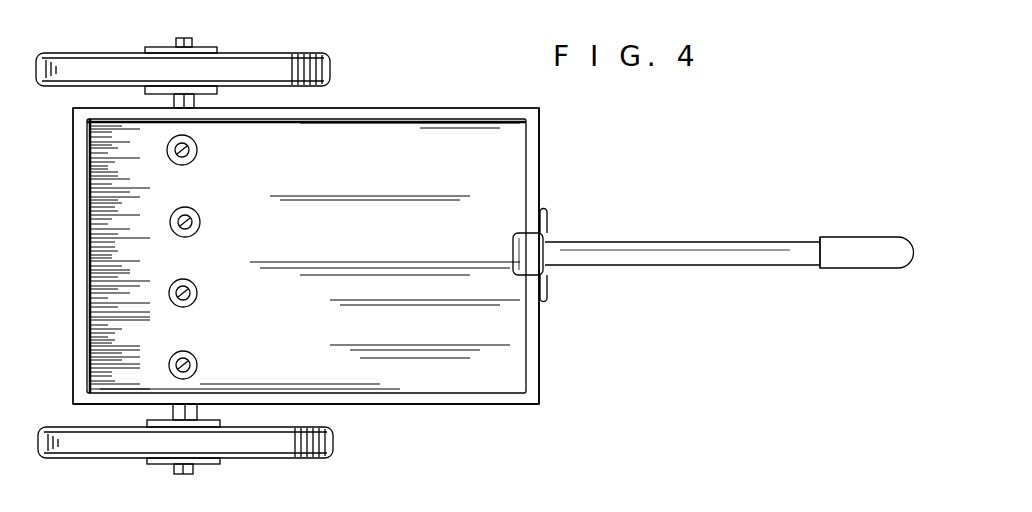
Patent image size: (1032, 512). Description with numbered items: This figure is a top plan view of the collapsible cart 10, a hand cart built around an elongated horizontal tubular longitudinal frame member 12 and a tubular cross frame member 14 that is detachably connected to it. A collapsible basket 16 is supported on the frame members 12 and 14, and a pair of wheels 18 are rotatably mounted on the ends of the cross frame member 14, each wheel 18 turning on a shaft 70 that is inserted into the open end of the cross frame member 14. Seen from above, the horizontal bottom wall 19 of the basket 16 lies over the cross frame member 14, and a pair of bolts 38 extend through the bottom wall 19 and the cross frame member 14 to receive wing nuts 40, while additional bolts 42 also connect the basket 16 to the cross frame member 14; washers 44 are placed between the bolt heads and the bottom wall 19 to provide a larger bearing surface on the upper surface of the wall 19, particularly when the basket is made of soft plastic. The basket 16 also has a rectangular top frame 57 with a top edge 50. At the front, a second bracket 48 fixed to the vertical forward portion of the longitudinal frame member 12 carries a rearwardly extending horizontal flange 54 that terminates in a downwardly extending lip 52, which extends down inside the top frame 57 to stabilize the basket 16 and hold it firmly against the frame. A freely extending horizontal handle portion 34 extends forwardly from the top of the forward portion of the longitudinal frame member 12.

The collapsible cart 10 is at (451, 82).
The longitudinal frame member 12 is at (668, 225).
The cross frame member 14 is at (172, 103).
The collapsible basket 16 is at (551, 132).
The wheel 18 is at (322, 54).
The bottom wall 19 is at (368, 252).
The handle portion 34 is at (763, 242).
The bolt 38 is at (186, 280).
The wing nut 40 is at (193, 303).
The additional bolt 42 is at (193, 151).
The washer 44 is at (182, 166).
The second bracket 48 is at (547, 287).
The top edge 50 is at (534, 350).
The lip 52 is at (513, 250).
The horizontal flange 54 is at (547, 236).
The top frame 57 is at (475, 398).
The shaft 70 is at (192, 40).